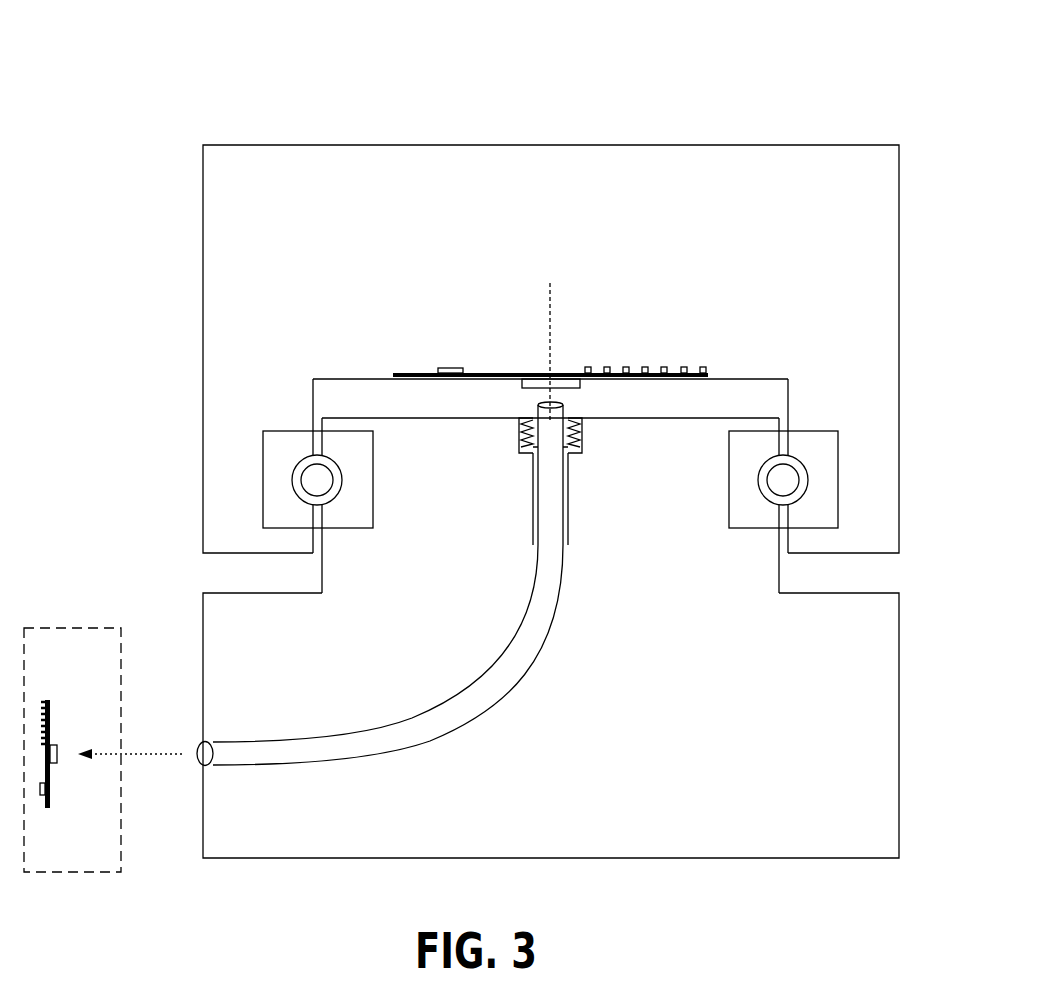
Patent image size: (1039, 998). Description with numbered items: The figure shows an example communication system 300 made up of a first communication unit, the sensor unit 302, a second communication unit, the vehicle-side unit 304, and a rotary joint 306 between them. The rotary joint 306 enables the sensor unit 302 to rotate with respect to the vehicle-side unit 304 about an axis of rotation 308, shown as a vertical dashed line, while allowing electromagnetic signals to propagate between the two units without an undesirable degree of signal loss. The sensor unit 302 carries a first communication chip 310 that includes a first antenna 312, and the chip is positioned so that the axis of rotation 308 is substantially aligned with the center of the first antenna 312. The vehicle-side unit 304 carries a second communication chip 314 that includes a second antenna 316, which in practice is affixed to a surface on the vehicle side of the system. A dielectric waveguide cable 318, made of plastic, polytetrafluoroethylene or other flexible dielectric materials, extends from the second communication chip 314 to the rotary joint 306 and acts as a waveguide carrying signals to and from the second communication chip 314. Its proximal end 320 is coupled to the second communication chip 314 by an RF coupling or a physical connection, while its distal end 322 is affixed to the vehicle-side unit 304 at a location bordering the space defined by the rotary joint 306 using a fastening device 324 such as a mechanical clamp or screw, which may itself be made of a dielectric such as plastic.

The communication system 300 is at (122, 96).
The sensor unit 302 is at (217, 212).
The vehicle-side unit 304 is at (217, 645).
The rotary joint 306 is at (377, 397).
The axis of rotation 308 is at (548, 304).
The first communication chip 310 is at (613, 370).
The first antenna 312 is at (530, 380).
The second communication chip 314 is at (50, 710).
The second antenna 316 is at (53, 764).
The dielectric waveguide cable 318 is at (513, 643).
The proximal end 320 is at (215, 764).
The distal end 322 is at (563, 413).
The fastening device 324 is at (575, 441).